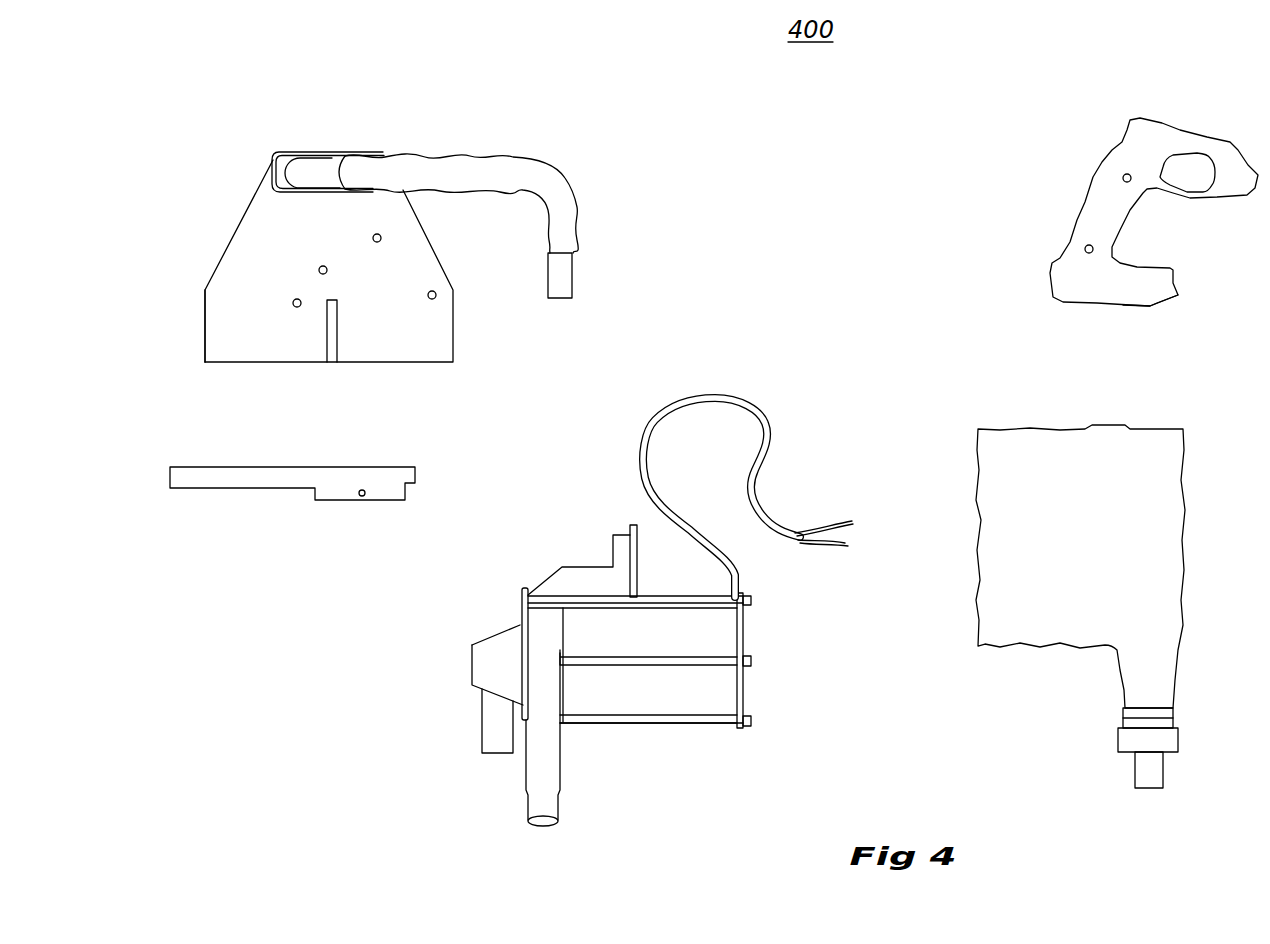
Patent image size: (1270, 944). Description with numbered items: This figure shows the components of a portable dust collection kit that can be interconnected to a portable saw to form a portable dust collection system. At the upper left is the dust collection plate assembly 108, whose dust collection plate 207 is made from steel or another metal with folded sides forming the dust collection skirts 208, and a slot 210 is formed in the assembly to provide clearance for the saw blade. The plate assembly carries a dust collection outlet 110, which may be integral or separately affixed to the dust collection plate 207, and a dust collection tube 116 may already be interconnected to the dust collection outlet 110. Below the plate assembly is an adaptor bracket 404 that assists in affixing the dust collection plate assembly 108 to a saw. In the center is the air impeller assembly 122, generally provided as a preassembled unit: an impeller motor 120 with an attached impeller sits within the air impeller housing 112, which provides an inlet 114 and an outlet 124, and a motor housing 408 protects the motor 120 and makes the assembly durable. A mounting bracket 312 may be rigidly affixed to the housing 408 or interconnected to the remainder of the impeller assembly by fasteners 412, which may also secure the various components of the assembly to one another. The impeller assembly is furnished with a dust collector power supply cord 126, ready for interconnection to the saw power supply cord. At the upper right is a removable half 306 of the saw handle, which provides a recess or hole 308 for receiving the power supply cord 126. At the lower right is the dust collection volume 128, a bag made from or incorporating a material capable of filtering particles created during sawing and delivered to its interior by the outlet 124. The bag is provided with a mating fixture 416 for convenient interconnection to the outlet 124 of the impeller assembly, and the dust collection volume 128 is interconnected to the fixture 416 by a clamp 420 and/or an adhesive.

The dust collection plate assembly 108 is at (293, 151).
The dust collection outlet 110 is at (327, 172).
The dust collection tube 116 is at (524, 178).
The dust collection plate 207 is at (253, 235).
The dust collection skirts 208 is at (205, 320).
The slot 210 is at (333, 365).
The adaptor bracket 404 is at (257, 490).
The mounting bracket 312 is at (583, 565).
The air impeller housing 112 is at (540, 625).
The inlet 114 is at (490, 720).
The motor housing 408 is at (715, 638).
The impeller motor 120 is at (722, 694).
The fasteners 412 is at (675, 605).
The air impeller assembly 122 is at (714, 721).
The outlet 124 is at (557, 810).
The dust collector power supply cord 126 is at (735, 398).
The removable half of the handle 306 is at (1095, 215).
The recess or hole 308 is at (1153, 307).
The dust collection volume 128 is at (1010, 429).
The clamp 420 is at (1122, 712).
The mating fixture 416 is at (1180, 738).